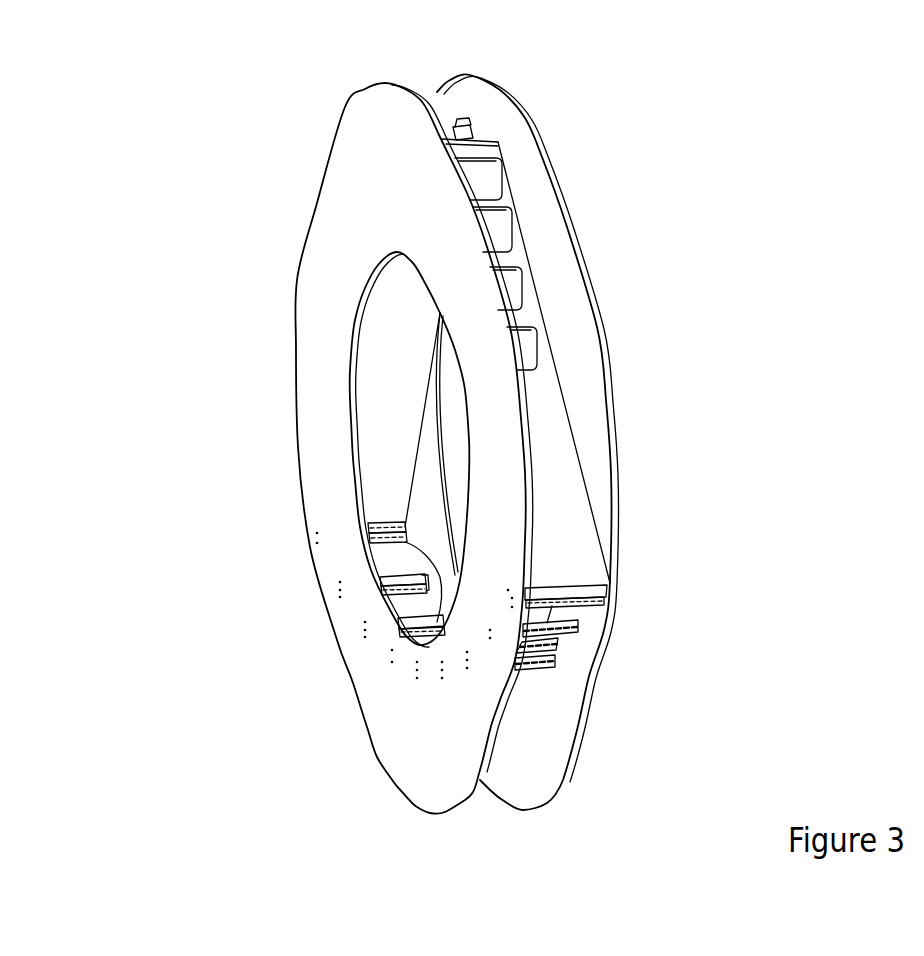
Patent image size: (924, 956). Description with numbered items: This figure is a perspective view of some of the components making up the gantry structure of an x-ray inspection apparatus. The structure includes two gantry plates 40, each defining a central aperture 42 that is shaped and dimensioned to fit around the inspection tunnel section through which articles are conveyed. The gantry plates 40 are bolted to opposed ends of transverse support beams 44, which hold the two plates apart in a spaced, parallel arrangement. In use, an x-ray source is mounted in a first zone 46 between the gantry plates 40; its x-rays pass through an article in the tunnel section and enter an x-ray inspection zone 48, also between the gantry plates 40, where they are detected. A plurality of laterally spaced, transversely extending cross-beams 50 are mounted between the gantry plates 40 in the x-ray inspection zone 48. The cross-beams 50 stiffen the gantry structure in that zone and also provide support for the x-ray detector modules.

The gantry plate 40 is at (313, 238).
The central aperture 42 is at (362, 460).
The transverse support beam 44 is at (573, 560).
The first zone 46 is at (437, 103).
The x-ray inspection zone 48 is at (397, 593).
The cross-beam 50 is at (424, 572).